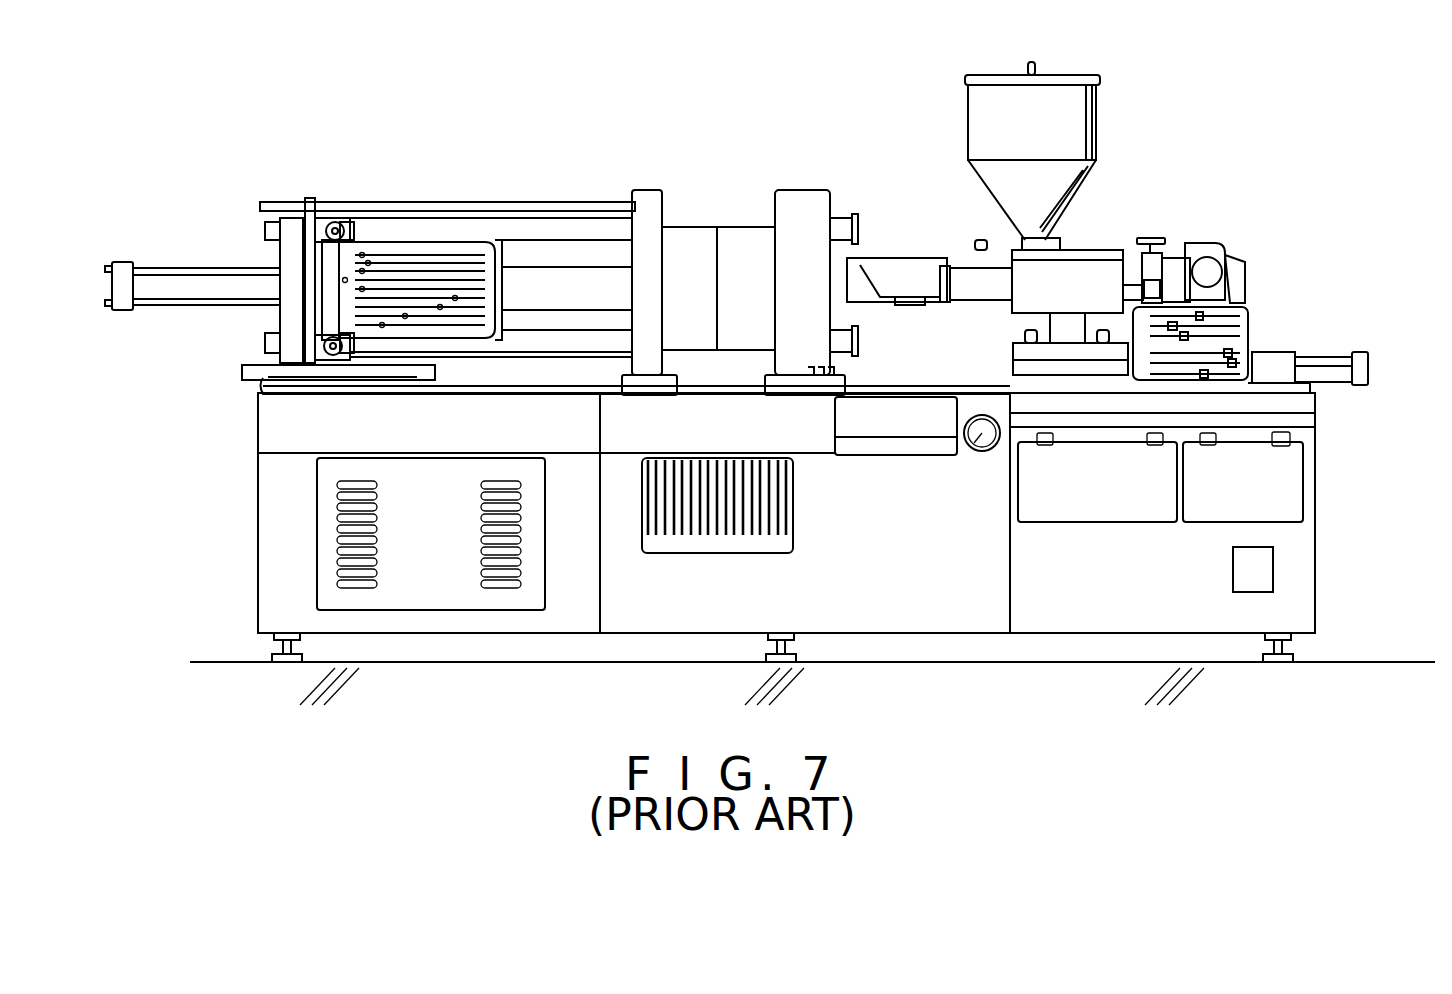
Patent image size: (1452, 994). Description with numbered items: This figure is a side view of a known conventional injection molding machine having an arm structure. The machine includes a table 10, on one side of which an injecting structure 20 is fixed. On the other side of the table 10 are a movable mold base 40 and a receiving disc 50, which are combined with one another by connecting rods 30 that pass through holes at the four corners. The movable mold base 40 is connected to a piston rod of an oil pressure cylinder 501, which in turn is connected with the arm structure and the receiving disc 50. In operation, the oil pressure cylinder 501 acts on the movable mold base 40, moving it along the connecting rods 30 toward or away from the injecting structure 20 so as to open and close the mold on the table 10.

The table 10 is at (278, 516).
The injecting structure 20 is at (1148, 178).
The connecting rods 30 is at (550, 234).
The movable mold base 40 is at (643, 205).
The receiving disc 50 is at (327, 216).
The oil pressure cylinder 501 is at (197, 272).